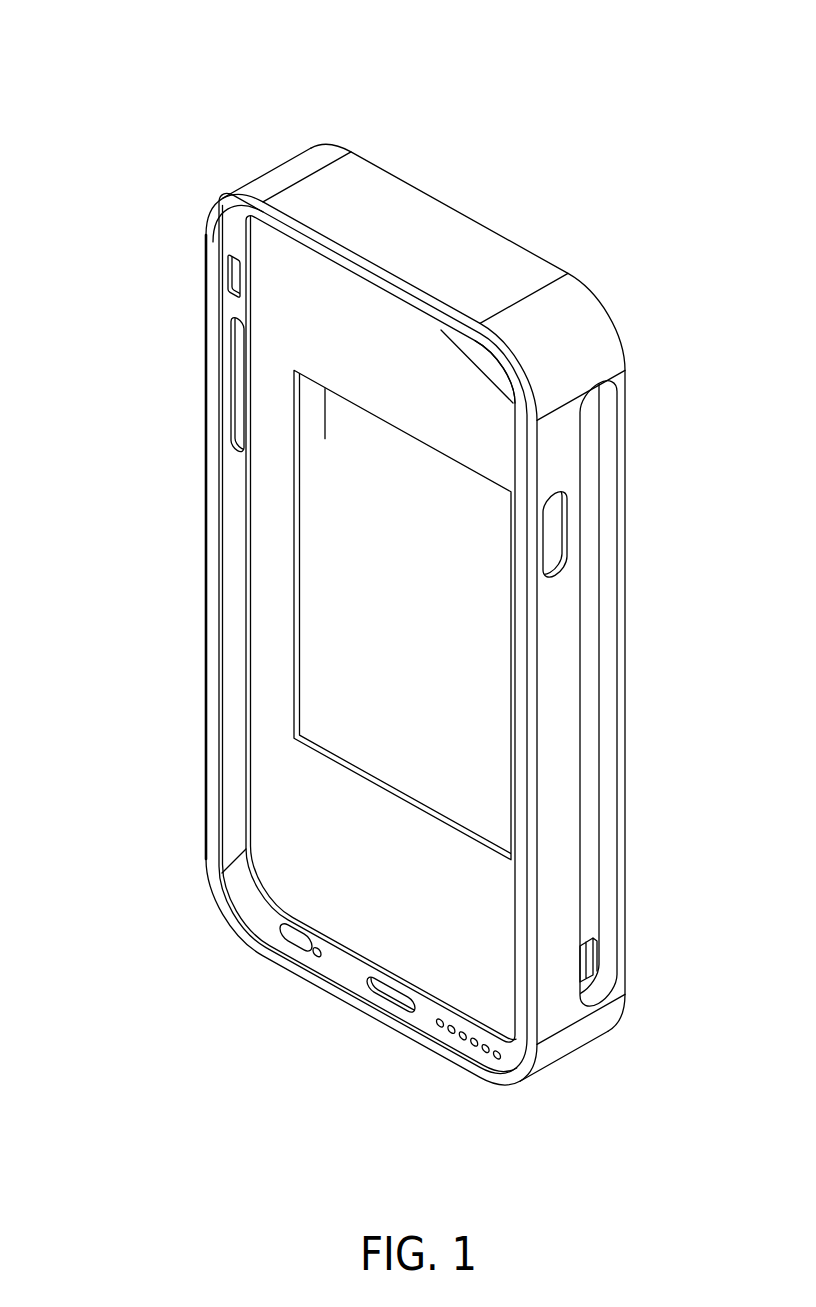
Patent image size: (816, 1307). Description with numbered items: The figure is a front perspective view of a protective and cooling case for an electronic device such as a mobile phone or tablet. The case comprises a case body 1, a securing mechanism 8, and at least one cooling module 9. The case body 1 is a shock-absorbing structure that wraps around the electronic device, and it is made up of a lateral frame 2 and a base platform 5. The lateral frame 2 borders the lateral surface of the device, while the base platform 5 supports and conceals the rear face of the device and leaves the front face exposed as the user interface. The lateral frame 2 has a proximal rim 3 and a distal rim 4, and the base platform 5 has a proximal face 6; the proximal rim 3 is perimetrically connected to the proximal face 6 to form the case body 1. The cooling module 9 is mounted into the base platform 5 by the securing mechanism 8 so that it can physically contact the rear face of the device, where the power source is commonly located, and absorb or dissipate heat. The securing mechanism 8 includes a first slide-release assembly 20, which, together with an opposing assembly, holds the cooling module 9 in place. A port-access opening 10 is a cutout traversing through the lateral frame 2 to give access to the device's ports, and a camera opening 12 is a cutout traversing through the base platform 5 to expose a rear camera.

The case body 1 is at (148, 61).
The lateral frame 2 is at (177, 515).
The proximal rim 3 is at (255, 307).
The distal rim 4 is at (218, 202).
The base platform 5 is at (656, 574).
The proximal face 6 is at (375, 348).
The securing mechanism 8 is at (594, 963).
The cooling module 9 is at (377, 762).
The port-access opening 10 is at (381, 991).
The camera opening 12 is at (470, 363).
The first slide-release assembly 20 is at (588, 960).